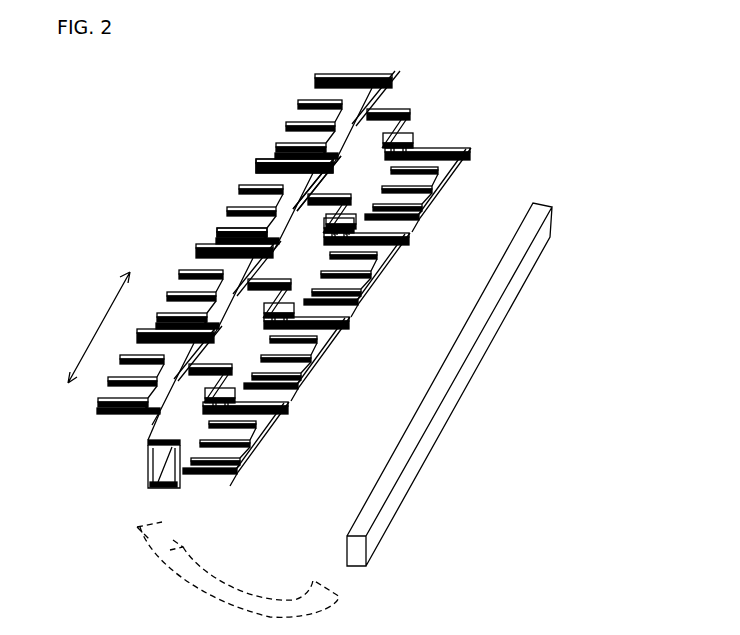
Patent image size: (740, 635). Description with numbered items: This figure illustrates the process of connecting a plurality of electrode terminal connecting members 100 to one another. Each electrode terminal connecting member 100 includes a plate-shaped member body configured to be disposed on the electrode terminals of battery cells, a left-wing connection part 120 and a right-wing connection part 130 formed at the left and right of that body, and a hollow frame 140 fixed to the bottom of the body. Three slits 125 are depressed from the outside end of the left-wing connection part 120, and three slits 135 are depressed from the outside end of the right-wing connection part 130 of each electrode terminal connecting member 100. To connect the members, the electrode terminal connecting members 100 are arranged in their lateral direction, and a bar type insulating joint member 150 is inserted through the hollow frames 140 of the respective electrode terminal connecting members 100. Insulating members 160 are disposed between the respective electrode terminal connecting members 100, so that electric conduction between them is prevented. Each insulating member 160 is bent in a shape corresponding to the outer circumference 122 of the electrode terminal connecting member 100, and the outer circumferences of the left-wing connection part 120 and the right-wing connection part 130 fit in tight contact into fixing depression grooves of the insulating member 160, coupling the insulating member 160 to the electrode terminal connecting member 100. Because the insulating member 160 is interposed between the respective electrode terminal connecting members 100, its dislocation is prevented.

The electrode terminal connecting member 100 is at (222, 182).
The left-wing connection part 120 is at (247, 198).
The outer circumference 122 is at (247, 178).
The slits 125 is at (227, 225).
The right-wing connection part 130 is at (365, 252).
The slits 135 is at (363, 300).
The hollow frame 140 is at (150, 467).
The insulating joint member 150 is at (515, 288).
The insulating member 160 is at (260, 163).